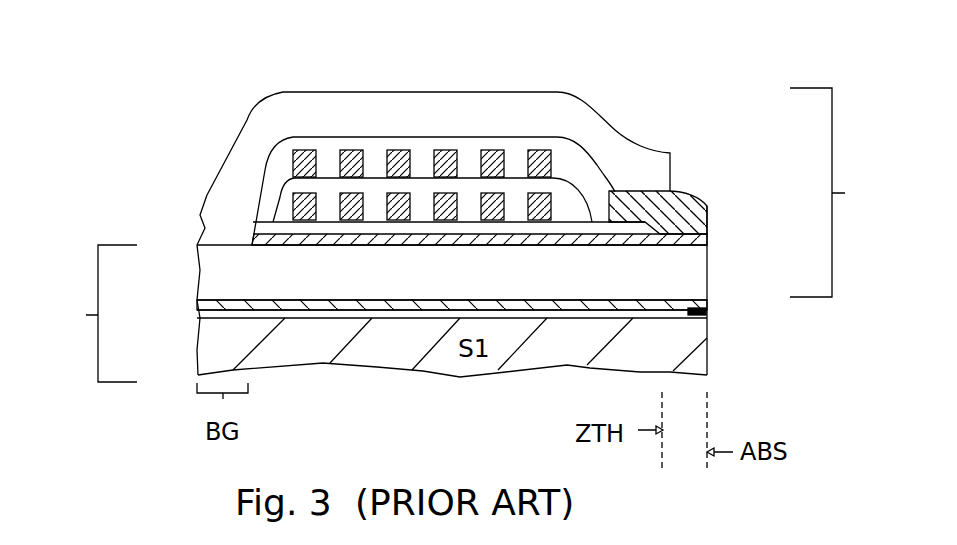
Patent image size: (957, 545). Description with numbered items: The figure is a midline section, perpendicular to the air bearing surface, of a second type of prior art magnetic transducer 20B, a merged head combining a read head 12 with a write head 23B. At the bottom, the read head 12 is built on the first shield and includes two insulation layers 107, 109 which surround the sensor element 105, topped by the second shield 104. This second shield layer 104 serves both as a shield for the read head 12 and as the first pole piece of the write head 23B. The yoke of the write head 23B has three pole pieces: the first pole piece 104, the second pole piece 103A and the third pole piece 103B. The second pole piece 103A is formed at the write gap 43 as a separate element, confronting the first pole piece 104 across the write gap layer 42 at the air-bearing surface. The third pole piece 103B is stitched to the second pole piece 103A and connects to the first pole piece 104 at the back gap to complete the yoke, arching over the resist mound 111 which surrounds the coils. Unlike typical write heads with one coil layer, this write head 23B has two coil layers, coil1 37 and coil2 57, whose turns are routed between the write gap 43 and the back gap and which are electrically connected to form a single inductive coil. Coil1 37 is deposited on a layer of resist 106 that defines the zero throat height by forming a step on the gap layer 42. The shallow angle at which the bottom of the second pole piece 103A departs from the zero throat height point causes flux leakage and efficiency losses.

The read head 12 is at (88, 313).
The magnetic transducer 20B is at (478, 113).
The write head 23B is at (846, 192).
The coil1 37 is at (293, 202).
The write gap layer 42 is at (536, 241).
The write gap 43 is at (703, 242).
The coil2 57 is at (293, 158).
The second pole piece P2 103A is at (682, 197).
The third pole piece P3 103B is at (613, 132).
The P1/S2 layer 104 is at (680, 277).
The sensor element 105 is at (707, 312).
The resist layer 106 is at (263, 225).
The insulation layer 107 is at (203, 317).
The insulation layer 109 is at (223, 305).
The resist mound 111 is at (323, 145).